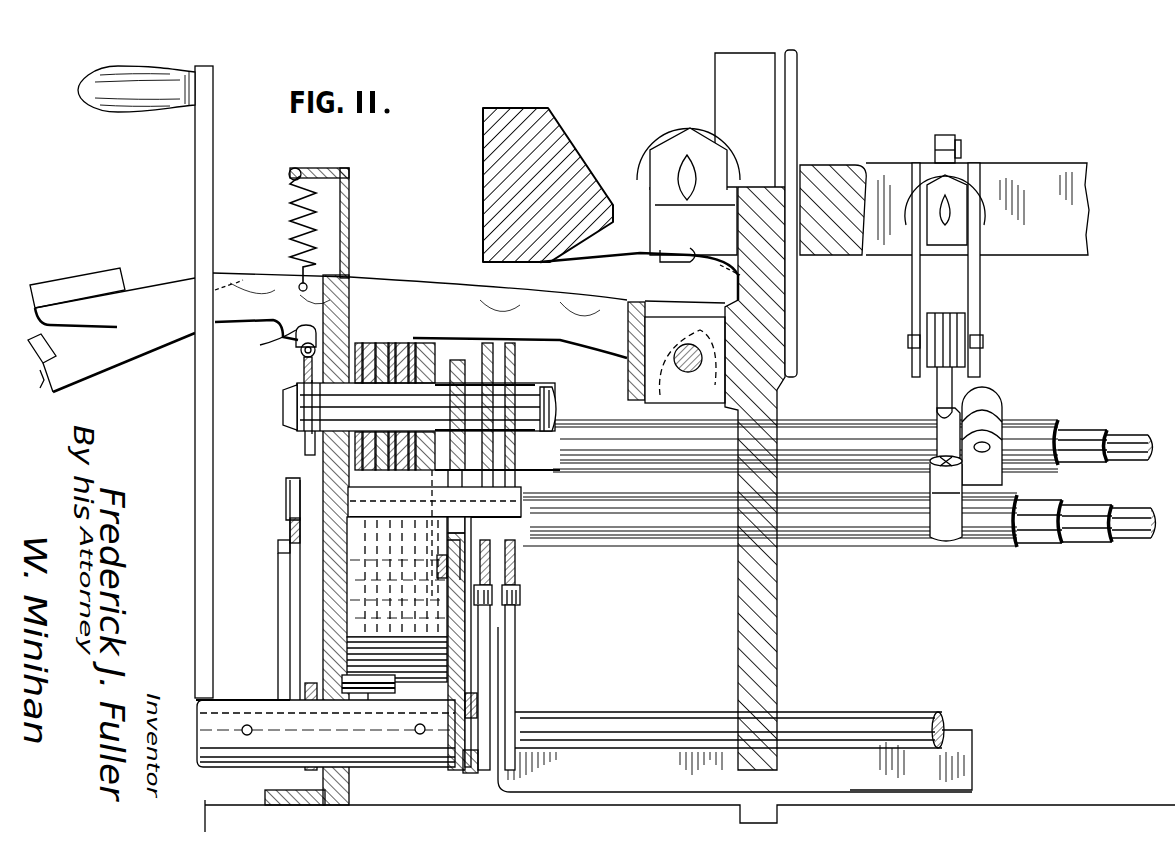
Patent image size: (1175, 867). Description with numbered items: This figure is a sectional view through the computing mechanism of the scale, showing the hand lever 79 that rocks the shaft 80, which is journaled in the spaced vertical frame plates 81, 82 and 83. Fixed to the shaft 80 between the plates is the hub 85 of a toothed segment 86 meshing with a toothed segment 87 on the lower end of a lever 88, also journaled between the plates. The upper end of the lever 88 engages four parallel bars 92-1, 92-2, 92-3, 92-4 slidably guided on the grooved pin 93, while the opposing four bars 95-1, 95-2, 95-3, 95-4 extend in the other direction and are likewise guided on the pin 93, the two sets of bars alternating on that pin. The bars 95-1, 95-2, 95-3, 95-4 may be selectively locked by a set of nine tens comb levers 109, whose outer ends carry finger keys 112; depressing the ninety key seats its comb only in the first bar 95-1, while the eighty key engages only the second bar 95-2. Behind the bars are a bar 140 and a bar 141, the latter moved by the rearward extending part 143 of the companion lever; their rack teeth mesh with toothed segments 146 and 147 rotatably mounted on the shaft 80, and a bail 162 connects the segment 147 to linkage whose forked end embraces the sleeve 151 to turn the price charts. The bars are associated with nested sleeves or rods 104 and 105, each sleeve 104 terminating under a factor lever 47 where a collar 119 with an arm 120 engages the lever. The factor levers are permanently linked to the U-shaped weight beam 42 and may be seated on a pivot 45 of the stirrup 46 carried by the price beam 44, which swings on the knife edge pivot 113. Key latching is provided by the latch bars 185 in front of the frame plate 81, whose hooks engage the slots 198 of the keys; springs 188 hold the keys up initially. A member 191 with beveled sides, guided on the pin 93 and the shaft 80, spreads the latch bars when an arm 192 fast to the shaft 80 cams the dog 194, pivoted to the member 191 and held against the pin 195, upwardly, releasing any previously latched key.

The hand lever 79 is at (198, 184).
The springs 188 is at (288, 219).
The weight beam 42 is at (575, 158).
The knife edge pivot 113 is at (685, 168).
The price beam 44 is at (1018, 168).
The stirrup 46 is at (981, 293).
The factor levers 47 is at (945, 312).
The pivot 45 is at (982, 366).
The sleeves or rods 104 is at (1118, 437).
The sleeves or rods 105 is at (1132, 548).
The arms 120 is at (942, 437).
The collars 119 is at (1003, 480).
The comb levers 109 is at (556, 312).
The finger keys 112 is at (90, 317).
The bar 140 is at (470, 380).
The bar 141 is at (517, 362).
The pin 93 is at (553, 399).
The rearward extending part 143 is at (521, 503).
The bar 92-1 is at (428, 363).
The bar 92-2 is at (402, 350).
The bar 92-3 is at (380, 443).
The bar 92-4 is at (357, 362).
The bar 95-1 is at (430, 350).
The bar 95-2 is at (422, 350).
The bar 95-3 is at (390, 347).
The bar 95-4 is at (372, 350).
The slots 198 is at (300, 350).
The latch bars 185 is at (305, 374).
The member 191 is at (310, 428).
The arm 192 is at (285, 565).
The dog 194 is at (288, 518).
The pin 195 is at (288, 500).
The frame plate 81 is at (210, 463).
The lever 88 is at (358, 600).
The toothed segment 87 is at (350, 640).
The toothed segment 86 is at (368, 695).
The hub 85 is at (418, 758).
The frame plate 82 is at (456, 672).
The toothed segment 146 is at (505, 642).
The toothed segment 147 is at (512, 604).
The sleeve 151 is at (468, 775).
The shaft 80 is at (562, 722).
The frame plate 83 is at (752, 612).
The bail 162 is at (958, 733).